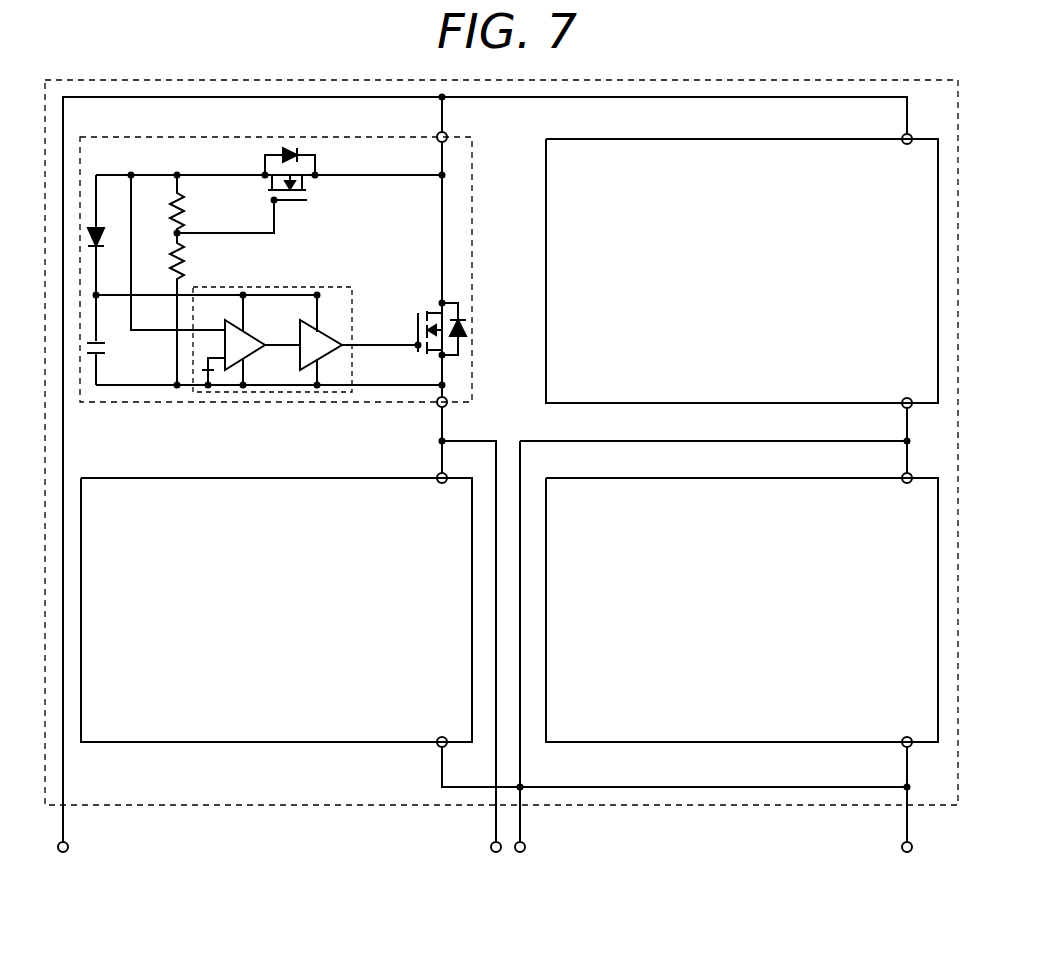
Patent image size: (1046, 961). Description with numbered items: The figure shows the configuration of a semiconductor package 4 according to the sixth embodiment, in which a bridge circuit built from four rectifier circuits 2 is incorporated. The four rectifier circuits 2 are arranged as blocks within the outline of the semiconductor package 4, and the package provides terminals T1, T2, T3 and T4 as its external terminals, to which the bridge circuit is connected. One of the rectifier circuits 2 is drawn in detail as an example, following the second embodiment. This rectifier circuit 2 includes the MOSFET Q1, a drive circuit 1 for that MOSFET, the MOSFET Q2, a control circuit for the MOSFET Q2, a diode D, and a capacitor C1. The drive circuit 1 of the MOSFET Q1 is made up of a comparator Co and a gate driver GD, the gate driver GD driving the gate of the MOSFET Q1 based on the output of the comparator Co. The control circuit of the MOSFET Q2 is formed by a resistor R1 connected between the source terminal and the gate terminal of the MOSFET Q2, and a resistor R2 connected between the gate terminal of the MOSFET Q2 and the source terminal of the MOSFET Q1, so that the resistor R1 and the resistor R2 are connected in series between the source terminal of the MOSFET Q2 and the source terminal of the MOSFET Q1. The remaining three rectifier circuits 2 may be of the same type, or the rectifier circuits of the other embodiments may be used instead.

The drive circuit 1 is at (320, 285).
The rectifier circuit 2 is at (365, 403).
The semiconductor package 4 is at (940, 808).
The MOSFET Q1 is at (430, 323).
The MOSFET Q2 is at (304, 175).
The resistor R1 is at (162, 204).
The resistor R2 is at (207, 292).
The diode D is at (101, 233).
The capacitor C1 is at (103, 359).
The comparator Co is at (251, 340).
The gate driver GD is at (360, 340).
The terminal T1 is at (61, 861).
The terminal T2 is at (494, 861).
The terminal T3 is at (519, 861).
The terminal T4 is at (905, 859).